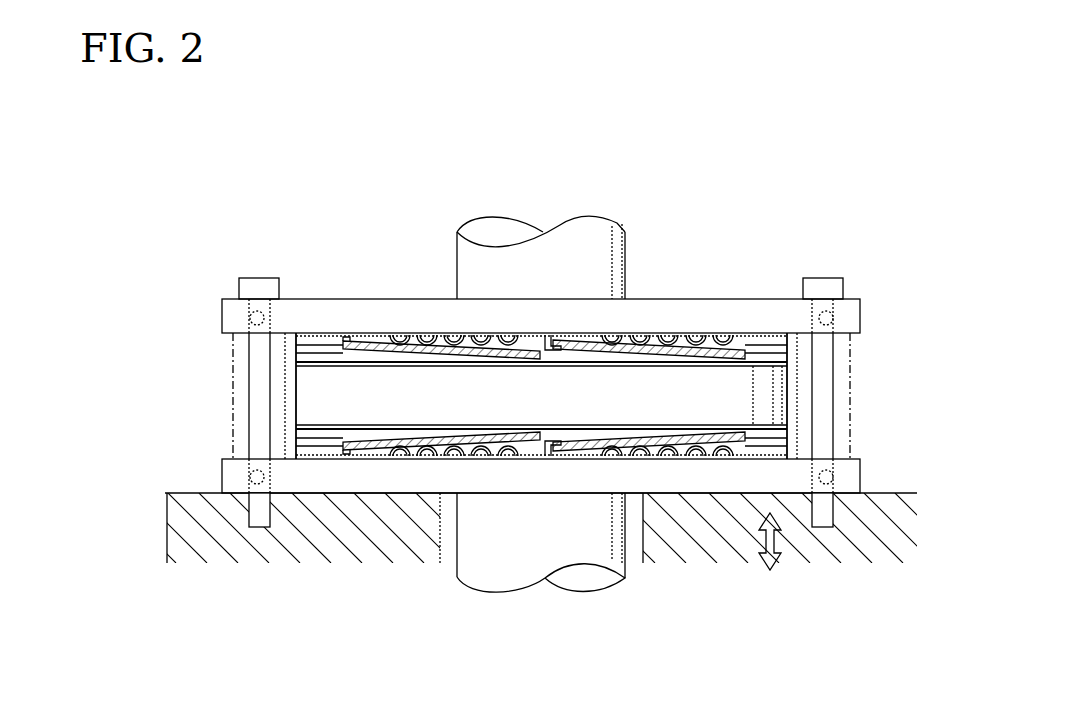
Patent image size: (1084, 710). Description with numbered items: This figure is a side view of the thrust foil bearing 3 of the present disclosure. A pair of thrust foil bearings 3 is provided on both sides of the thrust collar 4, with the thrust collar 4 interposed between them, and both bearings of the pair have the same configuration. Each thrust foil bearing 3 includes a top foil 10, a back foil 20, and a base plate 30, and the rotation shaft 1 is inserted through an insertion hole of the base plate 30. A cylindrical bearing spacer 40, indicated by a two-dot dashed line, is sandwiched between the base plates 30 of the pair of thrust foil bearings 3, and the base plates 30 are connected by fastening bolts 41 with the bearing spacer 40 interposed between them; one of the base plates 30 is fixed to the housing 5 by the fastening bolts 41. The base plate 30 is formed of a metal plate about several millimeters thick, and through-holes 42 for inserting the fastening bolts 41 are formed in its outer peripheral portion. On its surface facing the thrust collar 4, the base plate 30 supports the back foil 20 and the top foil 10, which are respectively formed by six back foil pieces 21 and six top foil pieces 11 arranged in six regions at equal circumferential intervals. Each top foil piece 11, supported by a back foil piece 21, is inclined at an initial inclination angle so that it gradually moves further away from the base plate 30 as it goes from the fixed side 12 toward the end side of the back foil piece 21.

The rotation shaft 1 is at (457, 250).
The thrust foil bearing 3 is at (734, 252).
The thrust collar 4 is at (767, 393).
The housing 5 is at (331, 535).
The top foil 10 is at (662, 344).
The top foil piece 11 is at (433, 343).
The fixed side 12 is at (547, 340).
The back foil 20 is at (695, 344).
The back foil piece 21 is at (404, 334).
The base plate 30 is at (760, 313).
The bearing spacer 40 is at (852, 393).
The fastening bolt 41 is at (259, 278).
The through-hole 42 is at (250, 316).